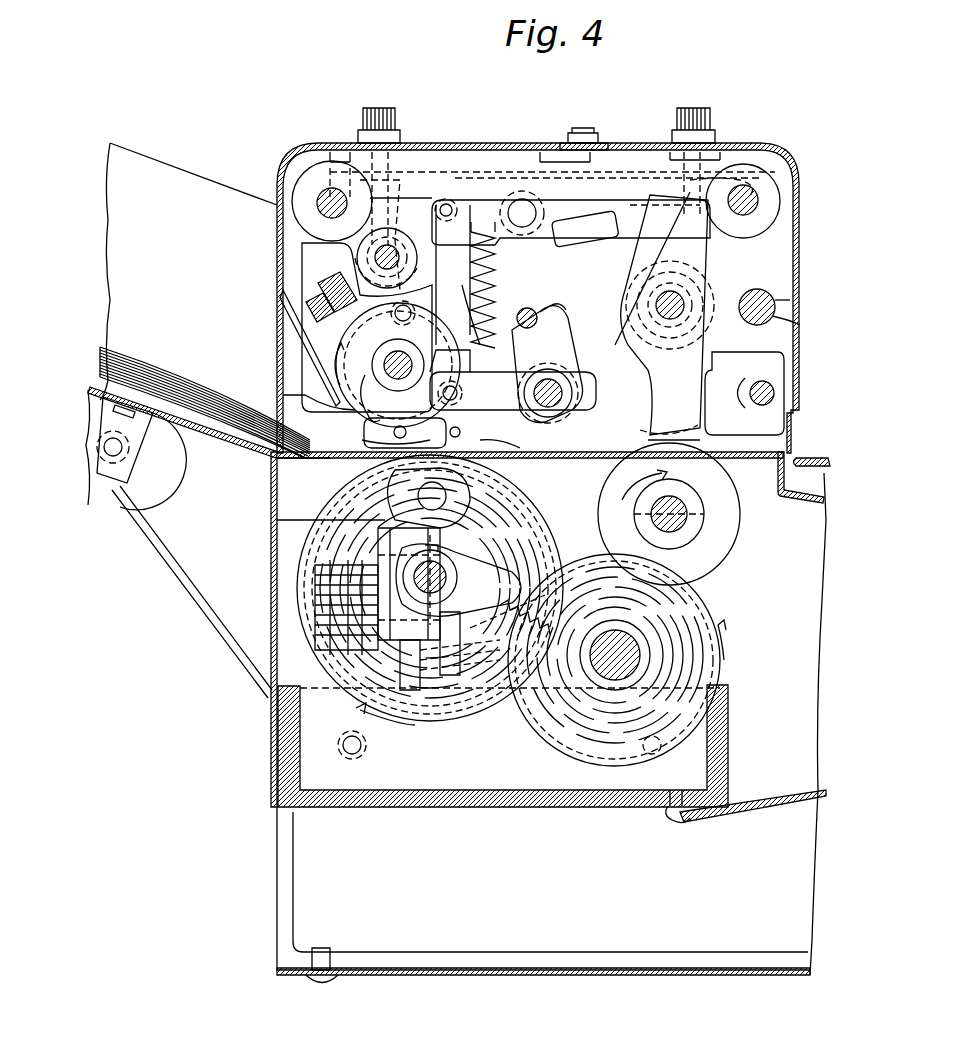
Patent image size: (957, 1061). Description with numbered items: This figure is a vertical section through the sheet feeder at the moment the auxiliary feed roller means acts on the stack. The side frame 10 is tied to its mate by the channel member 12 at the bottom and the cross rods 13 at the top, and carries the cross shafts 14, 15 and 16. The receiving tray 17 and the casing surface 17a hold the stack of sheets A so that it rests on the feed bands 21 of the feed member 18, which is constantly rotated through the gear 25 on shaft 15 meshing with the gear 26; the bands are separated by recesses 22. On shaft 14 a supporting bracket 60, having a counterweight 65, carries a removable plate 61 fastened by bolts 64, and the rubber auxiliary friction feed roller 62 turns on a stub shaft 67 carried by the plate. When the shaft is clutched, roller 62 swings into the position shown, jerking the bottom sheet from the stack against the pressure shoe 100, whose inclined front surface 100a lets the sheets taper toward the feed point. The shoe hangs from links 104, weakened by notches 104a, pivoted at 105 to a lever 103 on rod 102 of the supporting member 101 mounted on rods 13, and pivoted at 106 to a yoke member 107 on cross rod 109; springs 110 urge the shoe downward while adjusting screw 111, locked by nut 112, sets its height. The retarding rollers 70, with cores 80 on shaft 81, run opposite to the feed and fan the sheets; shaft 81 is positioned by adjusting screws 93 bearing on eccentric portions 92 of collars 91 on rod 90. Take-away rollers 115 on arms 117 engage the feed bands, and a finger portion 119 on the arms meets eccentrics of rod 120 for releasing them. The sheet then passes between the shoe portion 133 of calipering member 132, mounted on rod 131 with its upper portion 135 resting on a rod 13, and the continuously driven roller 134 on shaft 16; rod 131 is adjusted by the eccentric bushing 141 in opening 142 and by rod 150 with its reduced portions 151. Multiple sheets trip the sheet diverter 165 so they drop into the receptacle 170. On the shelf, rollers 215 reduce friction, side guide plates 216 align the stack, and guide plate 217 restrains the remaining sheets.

The supporting side frame 10 is at (286, 176).
The channel member 12 is at (548, 806).
The cross rods 13 is at (330, 200).
The cross shaft 14 is at (456, 590).
The cross shaft 15 is at (616, 632).
The cross shaft 16 is at (686, 510).
The receiving tray or supply hopper 17 is at (250, 458).
The sheet supporting surface 17a is at (305, 462).
The feed member 18 is at (305, 645).
The feed band portions 21 is at (556, 545).
The recesses 22 is at (548, 520).
The gear 25 is at (700, 608).
The gear 26 is at (497, 660).
The supporting bracket 60 is at (470, 530).
The removable plate 61 is at (401, 582).
The auxiliary friction feed roller 62 is at (314, 516).
The bolts 64 is at (320, 630).
The counterweight 65 is at (458, 580).
The stub shaft 67 is at (429, 498).
The retarding rollers 70 is at (302, 395).
The cores 80 is at (385, 355).
The shaft 81 is at (388, 335).
The rod 90 is at (374, 251).
The collars 91 is at (395, 248).
The eccentric portions 92 is at (388, 238).
The adjusting screws 93 is at (318, 320).
The pressure foot or shoe 100 is at (404, 420).
The front surface 100a is at (368, 374).
The supporting member 101 is at (596, 211).
The rod 102 is at (526, 228).
The lever 103 is at (585, 229).
The links 104 is at (451, 275).
The notches 104a is at (458, 312).
The pivot 105 is at (456, 212).
The pivot 106 is at (453, 383).
The yoke member 107 is at (513, 380).
The cross rod 109 is at (552, 385).
The springs 110 is at (494, 262).
The adjusting screw 111 is at (588, 128).
The nut 112 is at (570, 140).
The take-away or pressure rollers 115 is at (490, 432).
The arms 117 is at (552, 322).
The finger portion 119 is at (550, 305).
The rotatable rod 120 is at (527, 306).
The rod 131 is at (683, 297).
The calipering member 132 is at (660, 315).
The shoe portion 133 is at (680, 436).
The roller 134 is at (675, 520).
The upper portion 135 is at (683, 200).
The eccentric bushing 141 is at (708, 318).
The opening 142 is at (752, 305).
The rod 150 is at (803, 324).
The reduced portions 151 is at (806, 299).
The sheet diverter 165 is at (808, 462).
The receptacle 170 is at (543, 895).
The rollers 215 is at (150, 485).
The side guide plates 216 is at (188, 271).
The guide plate 217 is at (312, 362).
The stack of sheets A is at (148, 362).